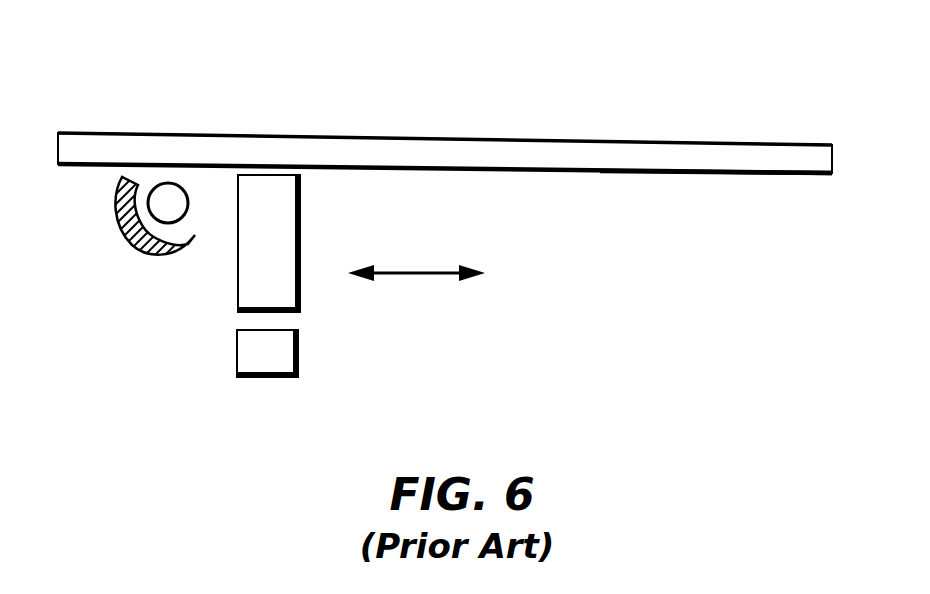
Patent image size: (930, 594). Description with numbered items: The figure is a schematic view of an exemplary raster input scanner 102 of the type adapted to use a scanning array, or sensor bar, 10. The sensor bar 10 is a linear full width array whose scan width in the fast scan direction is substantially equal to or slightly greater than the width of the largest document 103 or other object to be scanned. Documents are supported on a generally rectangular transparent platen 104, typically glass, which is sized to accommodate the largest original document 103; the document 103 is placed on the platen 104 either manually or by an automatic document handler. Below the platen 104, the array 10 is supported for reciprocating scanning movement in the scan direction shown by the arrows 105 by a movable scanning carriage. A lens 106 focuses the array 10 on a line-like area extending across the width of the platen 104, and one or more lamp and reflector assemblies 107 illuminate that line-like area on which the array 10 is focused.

The sensor bar 10 is at (218, 355).
The raster input scanner 102 is at (222, 112).
The document 103 is at (478, 138).
The platen 104 is at (675, 157).
The arrows 105 is at (418, 277).
The lens 106 is at (293, 225).
The lamp and reflector assembly 107 is at (124, 232).